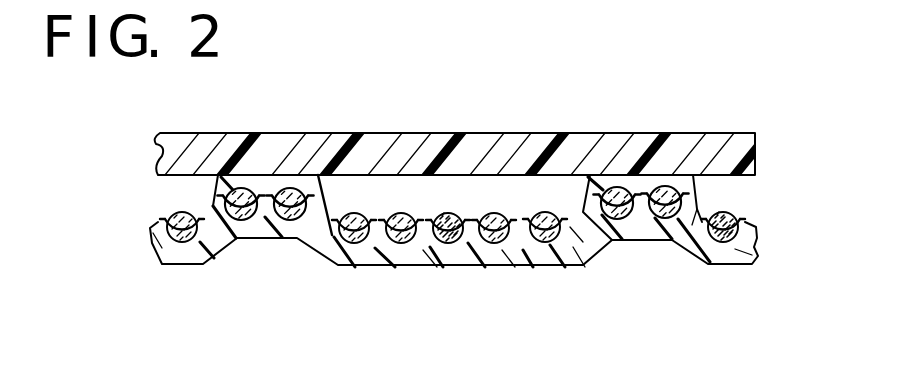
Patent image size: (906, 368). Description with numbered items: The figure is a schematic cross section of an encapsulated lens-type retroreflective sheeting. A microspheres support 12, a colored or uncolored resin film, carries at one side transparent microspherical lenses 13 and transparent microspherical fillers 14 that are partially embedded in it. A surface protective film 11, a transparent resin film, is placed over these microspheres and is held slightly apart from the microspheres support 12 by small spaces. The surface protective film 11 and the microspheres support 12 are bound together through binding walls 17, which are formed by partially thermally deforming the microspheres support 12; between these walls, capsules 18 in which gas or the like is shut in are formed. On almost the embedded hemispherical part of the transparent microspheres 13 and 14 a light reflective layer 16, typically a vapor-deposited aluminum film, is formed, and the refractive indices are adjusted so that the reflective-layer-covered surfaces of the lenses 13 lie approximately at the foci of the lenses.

The surface protective film 11 is at (748, 160).
The microspheres support 12 is at (752, 252).
The transparent microspherical lenses 13 is at (545, 212).
The transparent microspherical fillers 14 is at (742, 220).
The light reflective layer 16 is at (575, 265).
The binding walls 17 is at (264, 186).
The capsules 18 is at (416, 192).